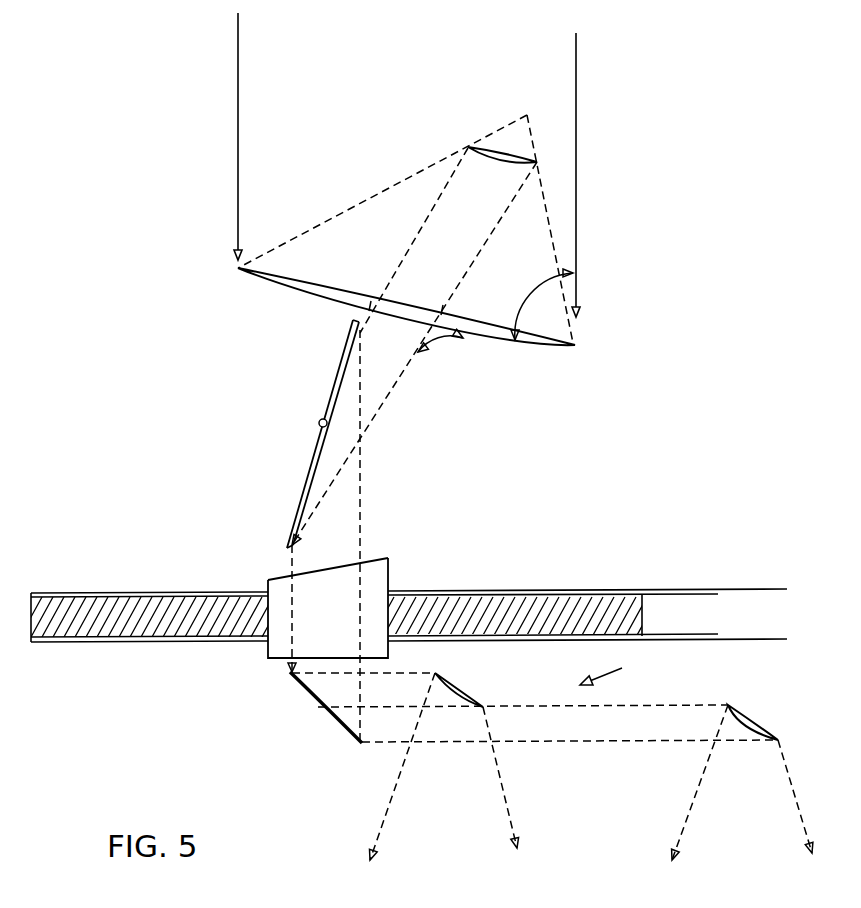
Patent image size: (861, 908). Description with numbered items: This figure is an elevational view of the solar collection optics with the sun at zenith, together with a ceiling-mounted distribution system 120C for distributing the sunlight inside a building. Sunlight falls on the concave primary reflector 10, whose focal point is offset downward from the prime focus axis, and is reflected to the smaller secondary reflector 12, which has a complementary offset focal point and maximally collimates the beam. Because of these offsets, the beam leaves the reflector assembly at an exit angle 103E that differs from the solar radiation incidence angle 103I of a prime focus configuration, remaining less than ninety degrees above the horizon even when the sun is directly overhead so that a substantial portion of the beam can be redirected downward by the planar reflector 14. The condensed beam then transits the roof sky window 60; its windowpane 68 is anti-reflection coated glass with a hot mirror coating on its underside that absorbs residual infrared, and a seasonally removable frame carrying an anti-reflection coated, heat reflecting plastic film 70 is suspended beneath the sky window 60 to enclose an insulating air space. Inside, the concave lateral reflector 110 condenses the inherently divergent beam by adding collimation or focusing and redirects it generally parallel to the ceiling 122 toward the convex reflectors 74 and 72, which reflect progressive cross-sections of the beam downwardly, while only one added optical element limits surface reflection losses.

The primary reflector 10 is at (509, 342).
The secondary reflector 12 is at (494, 151).
The planar reflector 14 is at (335, 380).
The roof sky window 60 is at (397, 547).
The windowpane 68 is at (283, 577).
The heat reflecting plastic film 70 is at (292, 662).
The convex reflector 72 is at (755, 725).
The convex reflector 74 is at (457, 690).
The solar radiation incidence angle 103I is at (546, 289).
The exit angle 103E is at (442, 356).
The concave lateral reflector 110 is at (314, 708).
The ceiling-mounted distribution system 120C is at (628, 669).
The ceiling 122 is at (104, 638).